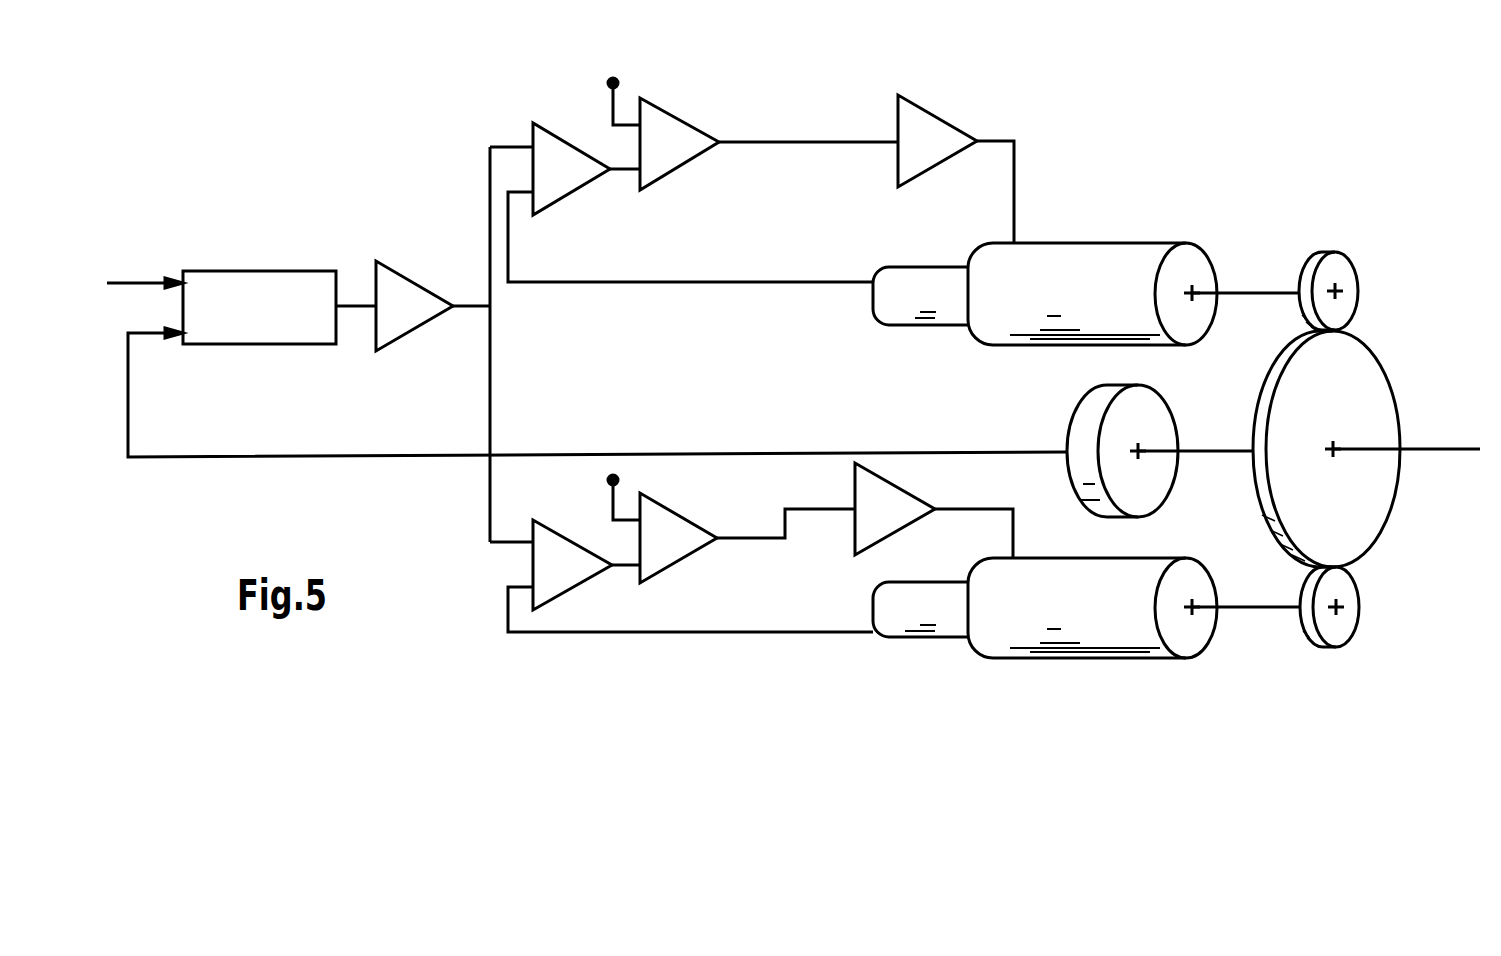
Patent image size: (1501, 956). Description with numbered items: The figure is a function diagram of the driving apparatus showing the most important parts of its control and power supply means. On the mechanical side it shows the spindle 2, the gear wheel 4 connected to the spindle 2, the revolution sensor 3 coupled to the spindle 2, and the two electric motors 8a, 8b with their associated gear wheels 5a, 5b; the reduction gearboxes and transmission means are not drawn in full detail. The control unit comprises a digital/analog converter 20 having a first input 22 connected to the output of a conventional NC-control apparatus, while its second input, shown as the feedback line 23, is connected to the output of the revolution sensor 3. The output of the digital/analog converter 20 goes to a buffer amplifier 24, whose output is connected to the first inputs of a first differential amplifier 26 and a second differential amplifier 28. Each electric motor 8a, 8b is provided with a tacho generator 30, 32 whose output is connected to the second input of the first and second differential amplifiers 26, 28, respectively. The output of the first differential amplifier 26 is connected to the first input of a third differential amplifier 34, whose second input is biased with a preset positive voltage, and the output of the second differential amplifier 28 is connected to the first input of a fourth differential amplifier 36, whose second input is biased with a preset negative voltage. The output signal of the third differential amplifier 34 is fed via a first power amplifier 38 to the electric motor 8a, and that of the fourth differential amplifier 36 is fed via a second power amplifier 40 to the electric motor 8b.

The spindle 2 is at (1433, 447).
The revolution sensor 3 is at (1147, 488).
The gear wheel 4 is at (1373, 403).
The gear wheel 5a is at (1340, 273).
The gear wheel 5b is at (1333, 622).
The electric motor 8a is at (1143, 253).
The electric motor 8b is at (1115, 647).
The digital/analog converter 20 is at (244, 335).
The first input 22 is at (132, 282).
The feedback line 23 is at (128, 424).
The buffer amplifier 24 is at (410, 315).
The first differential amplifier 26 is at (548, 188).
The second differential amplifier 28 is at (560, 573).
The tacho generator 30 is at (928, 322).
The tacho generator 32 is at (902, 637).
The third differential amplifier 34 is at (672, 133).
The fourth differential amplifier 36 is at (675, 532).
The first power amplifier 38 is at (938, 152).
The second power amplifier 40 is at (880, 518).